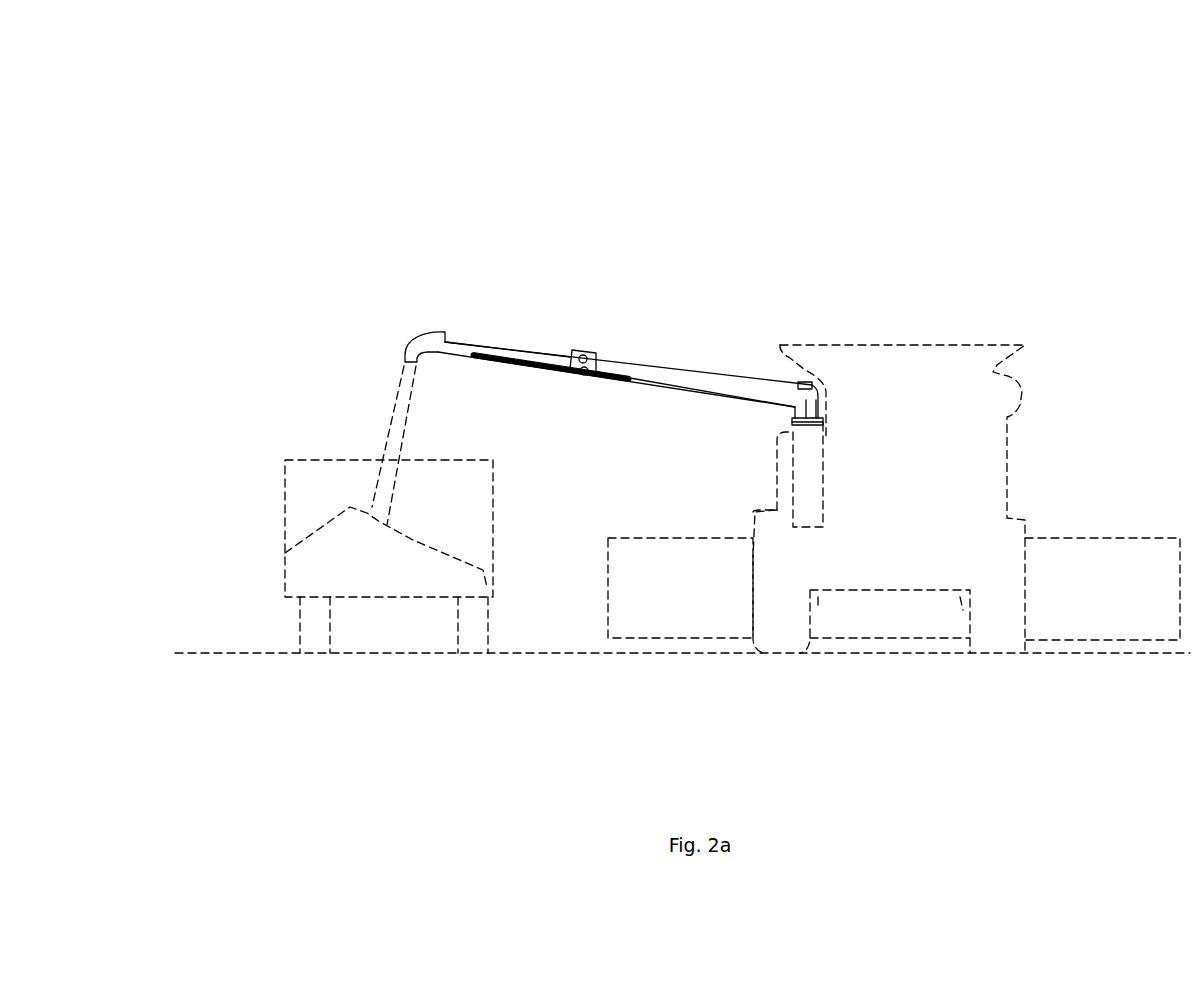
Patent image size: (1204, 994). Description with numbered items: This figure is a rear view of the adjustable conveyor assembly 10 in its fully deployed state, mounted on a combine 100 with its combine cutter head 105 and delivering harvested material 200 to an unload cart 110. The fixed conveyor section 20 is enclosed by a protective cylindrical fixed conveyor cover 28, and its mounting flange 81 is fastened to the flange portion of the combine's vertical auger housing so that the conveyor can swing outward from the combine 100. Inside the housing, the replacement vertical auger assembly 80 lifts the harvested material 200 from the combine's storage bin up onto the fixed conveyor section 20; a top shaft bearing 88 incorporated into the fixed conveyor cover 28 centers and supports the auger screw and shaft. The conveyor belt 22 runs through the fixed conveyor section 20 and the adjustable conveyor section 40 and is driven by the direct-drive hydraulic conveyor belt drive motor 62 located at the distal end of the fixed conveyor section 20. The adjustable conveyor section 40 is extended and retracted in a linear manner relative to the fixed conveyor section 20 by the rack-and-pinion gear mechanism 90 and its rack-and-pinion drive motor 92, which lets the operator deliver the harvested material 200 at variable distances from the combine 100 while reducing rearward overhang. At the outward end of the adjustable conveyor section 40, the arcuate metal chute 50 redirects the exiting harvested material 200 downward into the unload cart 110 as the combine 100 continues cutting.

The adjustable conveyor assembly 10 is at (242, 171).
The fixed conveyor section 20 is at (710, 372).
The conveyor belt 22 is at (460, 352).
The fixed conveyor cover 28 is at (682, 390).
The adjustable conveyor section 40 is at (494, 345).
The chute 50 is at (428, 338).
The conveyor belt drive motor 62 is at (582, 354).
The replacement vertical auger assembly 80 is at (794, 470).
The mounting flange 81 is at (808, 417).
The top shaft bearing 88 is at (811, 388).
The rack-and-pinion gear mechanism 90 is at (612, 381).
The rack-and-pinion drive motor 92 is at (589, 369).
The combine 100 is at (1007, 468).
The combine cutter head 105 is at (608, 600).
The unload cart 110 is at (288, 492).
The harvested material 200 is at (385, 436).